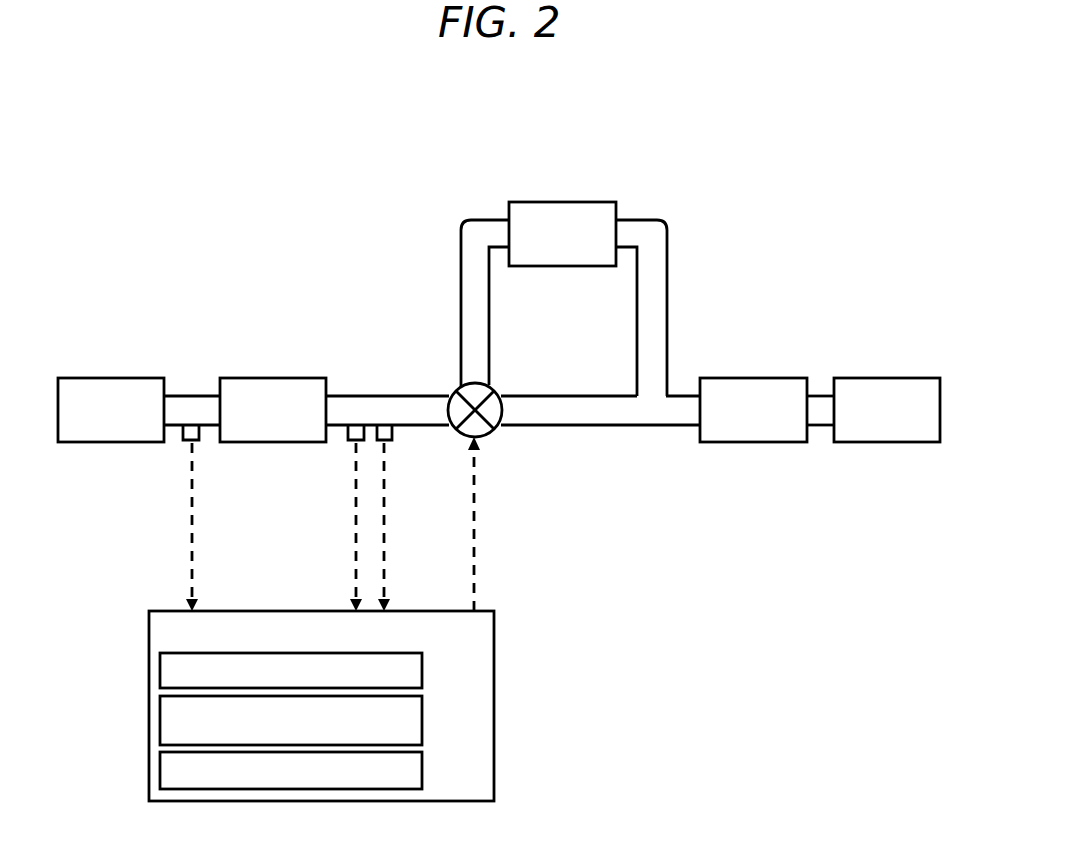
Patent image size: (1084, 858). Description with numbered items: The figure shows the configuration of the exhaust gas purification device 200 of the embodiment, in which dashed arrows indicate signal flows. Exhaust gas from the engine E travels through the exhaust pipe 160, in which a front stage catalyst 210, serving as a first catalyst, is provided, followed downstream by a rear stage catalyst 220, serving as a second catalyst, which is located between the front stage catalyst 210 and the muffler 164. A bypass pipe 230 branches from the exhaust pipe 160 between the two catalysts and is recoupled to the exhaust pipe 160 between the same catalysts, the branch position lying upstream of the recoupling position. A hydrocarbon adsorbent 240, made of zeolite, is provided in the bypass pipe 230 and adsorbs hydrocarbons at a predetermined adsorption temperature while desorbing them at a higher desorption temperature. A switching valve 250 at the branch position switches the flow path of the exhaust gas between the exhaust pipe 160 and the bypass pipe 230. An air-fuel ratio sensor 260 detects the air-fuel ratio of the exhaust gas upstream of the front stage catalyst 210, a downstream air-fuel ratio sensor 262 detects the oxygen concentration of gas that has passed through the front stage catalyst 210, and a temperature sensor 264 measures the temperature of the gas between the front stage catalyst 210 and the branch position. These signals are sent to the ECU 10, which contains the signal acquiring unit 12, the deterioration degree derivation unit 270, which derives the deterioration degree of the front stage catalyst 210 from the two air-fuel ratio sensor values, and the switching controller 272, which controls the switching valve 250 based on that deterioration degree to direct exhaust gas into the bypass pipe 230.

The exhaust gas purification device 200 is at (804, 87).
The engine E is at (113, 378).
The front stage catalyst 210 is at (275, 378).
The exhaust pipe 160 is at (366, 396).
The switching valve 250 is at (456, 388).
The bypass pipe 230 is at (492, 353).
The hydrocarbon adsorbent 240 is at (565, 202).
The rear stage catalyst 220 is at (755, 378).
The muffler 164 is at (890, 378).
The air-fuel ratio sensor 260 is at (200, 433).
The downstream air-fuel ratio sensor 262 is at (347, 437).
The temperature sensor 264 is at (393, 434).
The ECU 10 is at (418, 611).
The signal acquiring unit 12 is at (424, 672).
The deterioration degree derivation unit 270 is at (424, 722).
The switching controller 272 is at (424, 770).